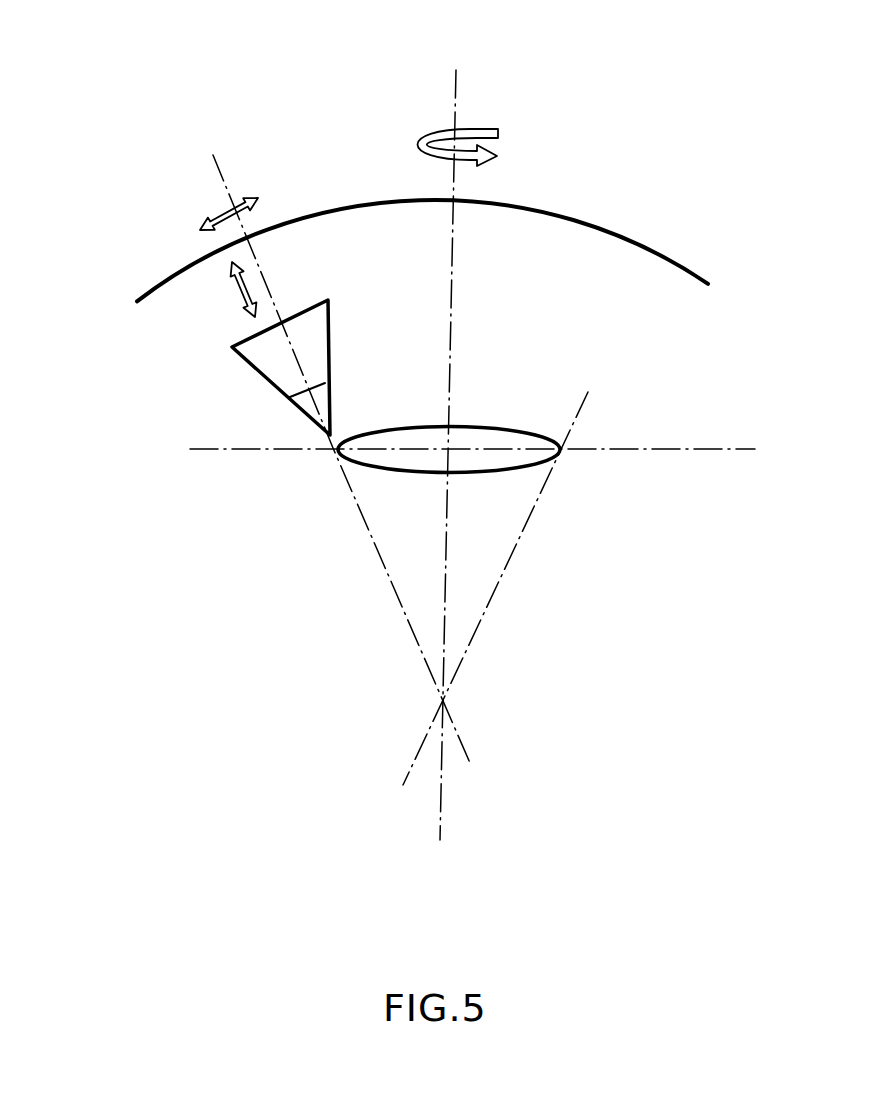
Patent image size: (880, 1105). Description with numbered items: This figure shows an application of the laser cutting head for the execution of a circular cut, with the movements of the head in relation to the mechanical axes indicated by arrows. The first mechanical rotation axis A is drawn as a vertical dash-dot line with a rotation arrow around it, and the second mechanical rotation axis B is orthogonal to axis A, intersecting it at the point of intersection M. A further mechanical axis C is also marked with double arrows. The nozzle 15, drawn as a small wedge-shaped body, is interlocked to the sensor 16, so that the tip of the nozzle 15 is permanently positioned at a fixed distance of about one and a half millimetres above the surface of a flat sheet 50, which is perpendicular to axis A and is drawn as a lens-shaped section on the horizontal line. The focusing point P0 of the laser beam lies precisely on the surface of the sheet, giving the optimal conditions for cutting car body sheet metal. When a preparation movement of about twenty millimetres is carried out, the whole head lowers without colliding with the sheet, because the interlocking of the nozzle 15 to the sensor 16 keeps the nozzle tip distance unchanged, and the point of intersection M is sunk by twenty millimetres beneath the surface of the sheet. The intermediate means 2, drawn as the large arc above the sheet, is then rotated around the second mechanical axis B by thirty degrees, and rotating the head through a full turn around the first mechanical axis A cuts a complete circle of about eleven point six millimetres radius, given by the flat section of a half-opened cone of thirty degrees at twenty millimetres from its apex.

The intermediate means 2 is at (303, 217).
The nozzle 15 is at (333, 360).
The sensor 16 is at (320, 403).
The flat sheet 50 is at (645, 453).
The first mechanical rotation axis A is at (453, 115).
The second mechanical rotation axis B is at (224, 201).
The mechanical axis C is at (308, 677).
The focusing point P0 is at (333, 448).
The point of intersection M is at (443, 703).